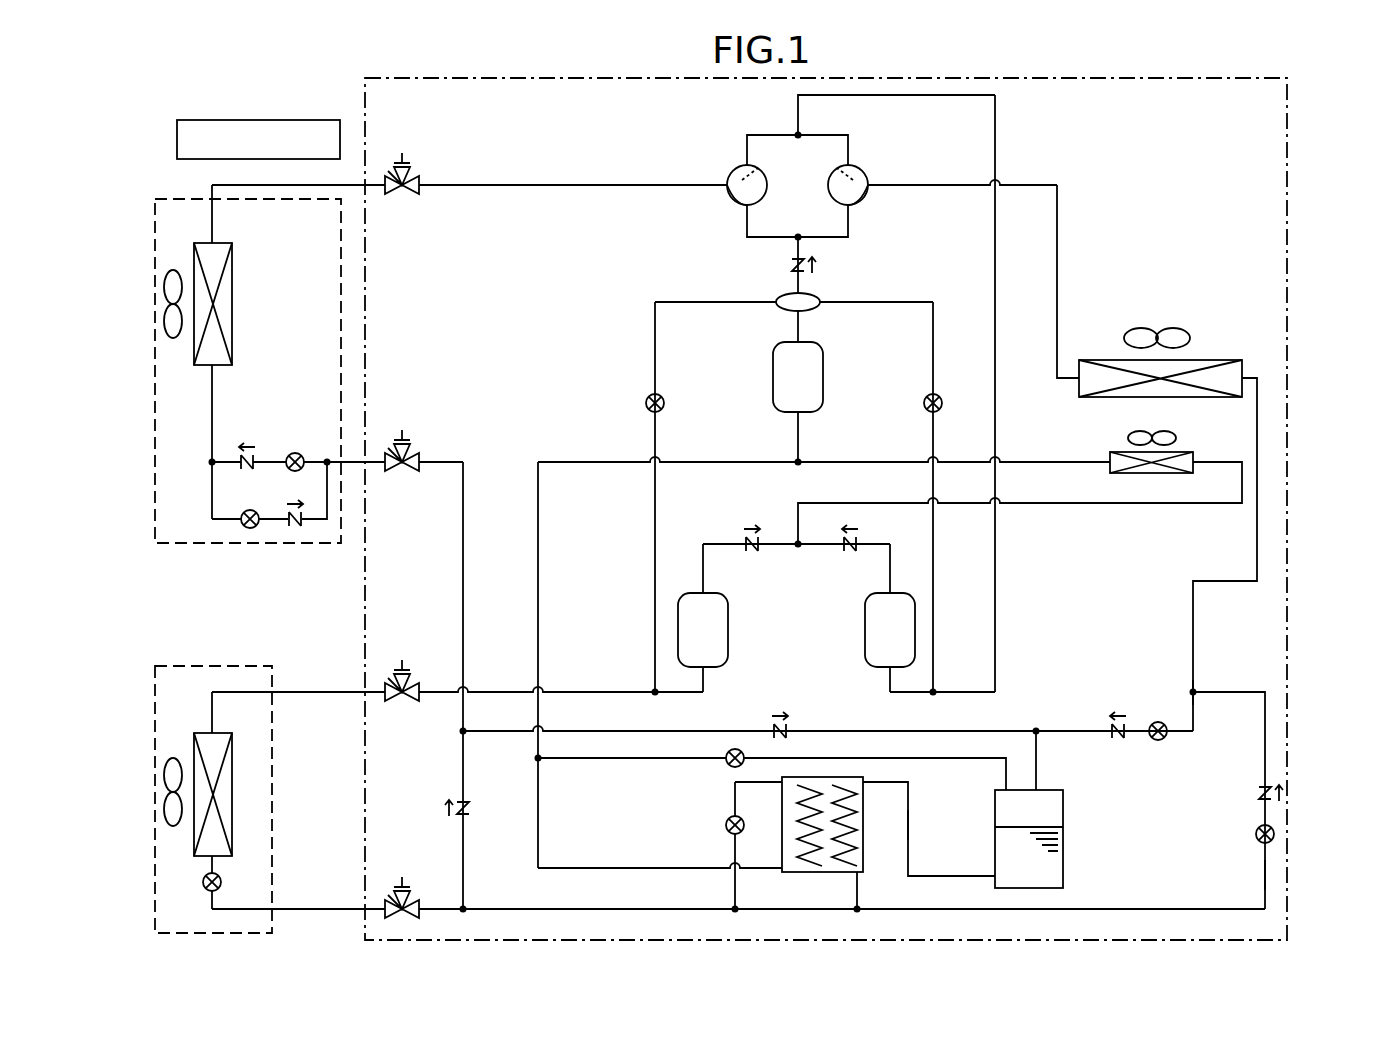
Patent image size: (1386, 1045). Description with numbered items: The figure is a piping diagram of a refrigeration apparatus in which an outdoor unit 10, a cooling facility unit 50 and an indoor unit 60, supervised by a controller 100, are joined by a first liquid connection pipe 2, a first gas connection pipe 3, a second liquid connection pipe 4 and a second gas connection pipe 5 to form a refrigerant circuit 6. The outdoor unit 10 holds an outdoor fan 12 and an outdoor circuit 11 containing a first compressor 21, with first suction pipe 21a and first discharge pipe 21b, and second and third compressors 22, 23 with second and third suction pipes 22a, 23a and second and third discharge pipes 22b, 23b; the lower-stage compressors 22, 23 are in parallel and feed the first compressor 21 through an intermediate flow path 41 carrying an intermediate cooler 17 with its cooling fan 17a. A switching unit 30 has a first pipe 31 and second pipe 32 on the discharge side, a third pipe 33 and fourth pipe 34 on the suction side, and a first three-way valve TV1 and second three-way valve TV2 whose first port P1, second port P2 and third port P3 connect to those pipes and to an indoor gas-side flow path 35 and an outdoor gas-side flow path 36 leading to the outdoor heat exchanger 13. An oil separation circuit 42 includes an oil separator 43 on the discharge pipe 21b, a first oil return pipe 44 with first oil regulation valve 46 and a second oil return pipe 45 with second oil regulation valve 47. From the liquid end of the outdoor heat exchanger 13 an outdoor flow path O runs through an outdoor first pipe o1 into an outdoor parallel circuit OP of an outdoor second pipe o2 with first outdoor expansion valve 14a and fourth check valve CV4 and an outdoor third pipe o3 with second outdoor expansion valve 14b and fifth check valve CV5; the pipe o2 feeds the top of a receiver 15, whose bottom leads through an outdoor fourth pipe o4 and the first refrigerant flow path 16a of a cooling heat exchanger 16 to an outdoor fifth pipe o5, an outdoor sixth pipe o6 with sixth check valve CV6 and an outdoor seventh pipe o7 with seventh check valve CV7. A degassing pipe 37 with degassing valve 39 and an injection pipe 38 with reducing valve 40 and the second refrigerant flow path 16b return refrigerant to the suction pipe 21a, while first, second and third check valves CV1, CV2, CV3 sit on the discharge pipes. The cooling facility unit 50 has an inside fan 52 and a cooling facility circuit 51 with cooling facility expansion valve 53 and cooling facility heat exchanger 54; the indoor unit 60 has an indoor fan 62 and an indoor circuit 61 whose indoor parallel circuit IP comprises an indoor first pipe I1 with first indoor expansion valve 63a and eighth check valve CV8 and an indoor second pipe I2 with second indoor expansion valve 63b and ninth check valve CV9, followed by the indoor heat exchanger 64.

The outdoor unit 10 is at (1292, 308).
The controller 100 is at (177, 143).
The indoor unit 60 is at (201, 548).
The second gas connection pipe 5 is at (313, 186).
The indoor heat exchanger 64 is at (222, 244).
The indoor fan 62 is at (173, 338).
The indoor circuit 61 is at (218, 379).
The indoor second pipe I2 is at (212, 492).
The indoor first pipe I1 is at (262, 462).
The eighth check valve CV8 is at (244, 454).
The first indoor expansion valve 63a is at (295, 452).
The second indoor expansion valve 63b is at (250, 510).
The ninth check valve CV9 is at (300, 529).
The indoor parallel circuit IP is at (272, 523).
The second liquid connection pipe 4 is at (353, 463).
The cooling facility unit 50 is at (276, 795).
The first gas connection pipe 3 is at (314, 693).
The cooling facility heat exchanger 54 is at (225, 733).
The inside fan 52 is at (173, 828).
The cooling facility expansion valve 53 is at (202, 882).
The cooling facility circuit 51 is at (222, 866).
The first liquid connection pipe 2 is at (314, 910).
The outdoor sixth pipe o6 is at (463, 768).
The sixth check valve CV6 is at (470, 816).
The outdoor fifth pipe o5 is at (508, 909).
The refrigerant circuit 6 is at (562, 178).
The indoor gas-side flow path 35 is at (547, 186).
The switching unit 30 is at (818, 183).
The first three-way valve TV1 is at (740, 166).
The second three-way valve TV2 is at (870, 166).
The third pipe 33 is at (767, 136).
The fourth pipe 34 is at (823, 136).
The first pipe 31 is at (756, 240).
The second pipe 32 is at (839, 240).
The first port P1 is at (855, 210).
The second port P2 is at (836, 170).
The third port P3 is at (870, 172).
The outdoor gas-side flow path 36 is at (958, 186).
The outdoor circuit 11 is at (1062, 242).
The outdoor fan 12 is at (1122, 340).
The outdoor heat exchanger 13 is at (1079, 391).
The outdoor parallel circuit OP is at (1224, 690).
The outdoor first pipe o1 is at (1192, 668).
The fifth check valve CV5 is at (1258, 798).
The second outdoor expansion valve 14b is at (1256, 836).
The outdoor third pipe o3 is at (1264, 873).
The first check valve CV1 is at (810, 270).
The oil separator 43 is at (782, 310).
The oil separation circuit 42 is at (728, 297).
The first oil return pipe 44 is at (655, 363).
The second oil return pipe 45 is at (933, 363).
The first oil regulation valve 46 is at (664, 403).
The second oil regulation valve 47 is at (924, 403).
The first discharge pipe 21b is at (800, 325).
The first compressor 21 is at (773, 396).
The first suction pipe 21a is at (797, 447).
The injection pipe 38 is at (539, 615).
The cooling fan 17a is at (1126, 440).
The intermediate cooler 17 is at (1109, 473).
The intermediate flow path 41 is at (1048, 505).
The second check valve CV2 is at (741, 541).
The third check valve CV3 is at (860, 541).
The second discharge pipe 22b is at (704, 567).
The third discharge pipe 23b is at (885, 567).
The second compressor 22 is at (726, 622).
The third compressor 23 is at (865, 622).
The second suction pipe 22a is at (681, 694).
The third suction pipe 23a is at (908, 694).
The seventh check valve CV7 is at (772, 731).
The outdoor seventh pipe o7 is at (842, 731).
The outdoor flow path O is at (1022, 728).
The outdoor second pipe o2 is at (1077, 730).
The fourth check valve CV4 is at (1112, 740).
The first outdoor expansion valve 14a is at (1157, 742).
The degassing pipe 37 is at (960, 760).
The degassing valve 39 is at (730, 768).
The reducing valve 40 is at (726, 825).
The cooling heat exchanger 16 is at (766, 843).
The second refrigerant flow path 16b is at (797, 810).
The first refrigerant flow path 16a is at (858, 810).
The outdoor fourth pipe o4 is at (910, 825).
The receiver 15 is at (1063, 815).